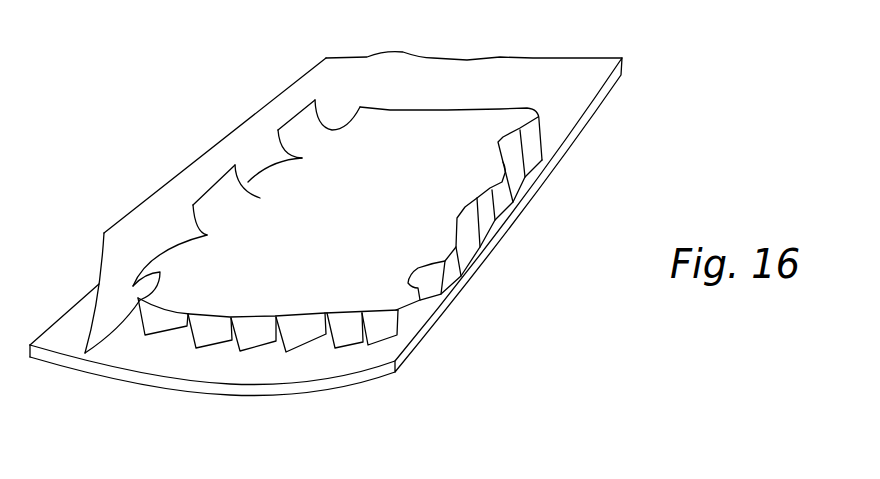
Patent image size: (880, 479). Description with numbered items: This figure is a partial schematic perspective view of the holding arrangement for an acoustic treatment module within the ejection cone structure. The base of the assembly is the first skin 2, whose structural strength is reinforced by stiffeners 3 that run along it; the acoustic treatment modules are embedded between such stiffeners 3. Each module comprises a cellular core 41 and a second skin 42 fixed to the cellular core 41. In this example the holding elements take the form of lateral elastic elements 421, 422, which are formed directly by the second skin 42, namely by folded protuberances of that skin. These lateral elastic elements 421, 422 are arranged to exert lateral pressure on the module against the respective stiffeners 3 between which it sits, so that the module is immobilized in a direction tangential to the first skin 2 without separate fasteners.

The first skin 2 is at (253, 388).
The stiffener 3 is at (112, 227).
The cellular core 41 is at (190, 333).
The second skin 42 is at (427, 125).
The lateral elastic element 421 is at (160, 259).
The lateral elastic element 422 is at (228, 187).